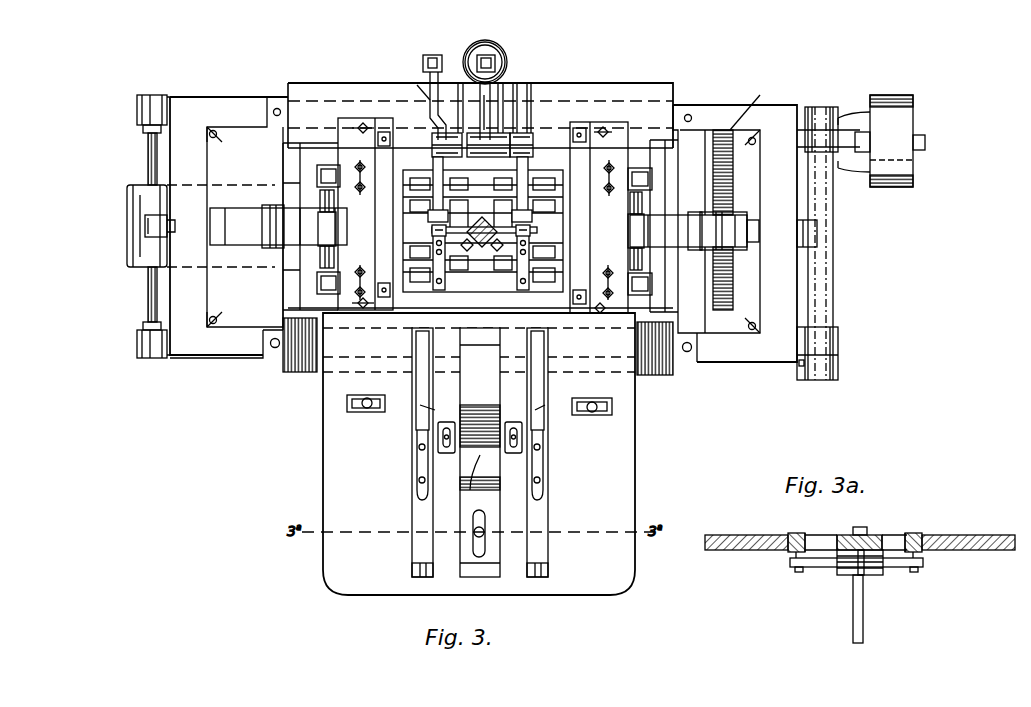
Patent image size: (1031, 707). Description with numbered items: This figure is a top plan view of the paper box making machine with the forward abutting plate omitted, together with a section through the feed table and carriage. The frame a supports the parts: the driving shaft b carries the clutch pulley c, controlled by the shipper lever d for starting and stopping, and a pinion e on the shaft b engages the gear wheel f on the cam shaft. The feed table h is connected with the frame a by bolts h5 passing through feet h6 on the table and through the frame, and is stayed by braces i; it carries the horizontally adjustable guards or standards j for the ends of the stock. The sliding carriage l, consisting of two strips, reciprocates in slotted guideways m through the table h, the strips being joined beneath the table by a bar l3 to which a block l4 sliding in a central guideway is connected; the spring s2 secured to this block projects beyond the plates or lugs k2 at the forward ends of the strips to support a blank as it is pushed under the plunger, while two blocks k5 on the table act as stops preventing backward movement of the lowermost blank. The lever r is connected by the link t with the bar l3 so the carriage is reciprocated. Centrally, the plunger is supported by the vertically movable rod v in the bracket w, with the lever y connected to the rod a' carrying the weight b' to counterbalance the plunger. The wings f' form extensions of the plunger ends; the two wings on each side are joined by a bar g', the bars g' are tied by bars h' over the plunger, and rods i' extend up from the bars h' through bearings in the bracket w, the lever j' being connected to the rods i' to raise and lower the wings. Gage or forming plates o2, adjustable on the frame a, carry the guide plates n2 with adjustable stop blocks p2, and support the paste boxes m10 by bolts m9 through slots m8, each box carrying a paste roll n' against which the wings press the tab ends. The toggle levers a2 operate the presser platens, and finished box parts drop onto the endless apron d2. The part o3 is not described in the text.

In FIG. 3, the frame a is at (483, 237).
In FIG. 3, the toggle levers a2 is at (484, 227).
In FIG. 3, the rod a' is at (483, 74).
In FIG. 3, the weight b' is at (502, 42).
In FIG. 3, the lever y is at (440, 100).
In FIG. 3, the bracket w is at (515, 118).
In FIG. 3, the lever j' is at (405, 83).
In FIG. 3, the adjustable blocks p2 is at (404, 113).
In FIG. 3, the plates n2 is at (372, 240).
In FIG. 3, the paste roll n' is at (464, 216).
In FIG. 3, the slots m8 is at (477, 230).
In FIG. 3, the bolts m9 is at (494, 230).
In FIG. 3, the paste boxes m10 is at (317, 177).
In FIG. 3, the gage or forming plates o2 is at (336, 248).
In FIG. 3, the sleeve collar o3 is at (318, 240).
In FIG. 3, the bar g' is at (483, 237).
In FIG. 3, the wings f' is at (476, 227).
In FIG. 3, the bars h' is at (481, 270).
In FIG. 3, the rods i' is at (481, 239).
In FIG. 3, the vertically movable rod v is at (484, 248).
In FIG. 3, the gear wheel f is at (729, 220).
In FIG. 3, the pinion e is at (733, 150).
In FIG. 3, the driving shaft b is at (836, 114).
In FIG. 3, the clutch pulley c is at (875, 141).
In FIG. 3, the shipper lever d is at (838, 379).
In FIG. 3, the endless apron d2 is at (128, 244).
In FIG. 3, the bolts h5 is at (270, 342).
In FIG. 3, the feet h6 is at (278, 350).
In FIG. 3, the feed table h is at (479, 454).
In FIG. 3A, the feed table h is at (860, 562).
In FIG. 3, the sliding carriage l is at (480, 452).
In FIG. 3, the plates or lugs k2 is at (418, 447).
In FIG. 3A, the plates or lugs k2 is at (796, 533).
In FIG. 3, the slotted guideways m is at (412, 392).
In FIG. 3A, the slotted guideways m is at (790, 550).
In FIG. 3, the block l4 is at (465, 550).
In FIG. 3A, the block l4 is at (848, 536).
In FIG. 3, the spring s2 is at (480, 465).
In FIG. 3A, the spring s2 is at (845, 575).
In FIG. 3, the blocks k5 is at (445, 422).
In FIG. 3, the guards or standards j is at (479, 422).
In FIG. 3A, the braces i is at (864, 535).
In FIG. 3A, the bar l3 is at (898, 568).
In FIG. 3A, the link t is at (864, 575).
In FIG. 3A, the lever r is at (863, 637).